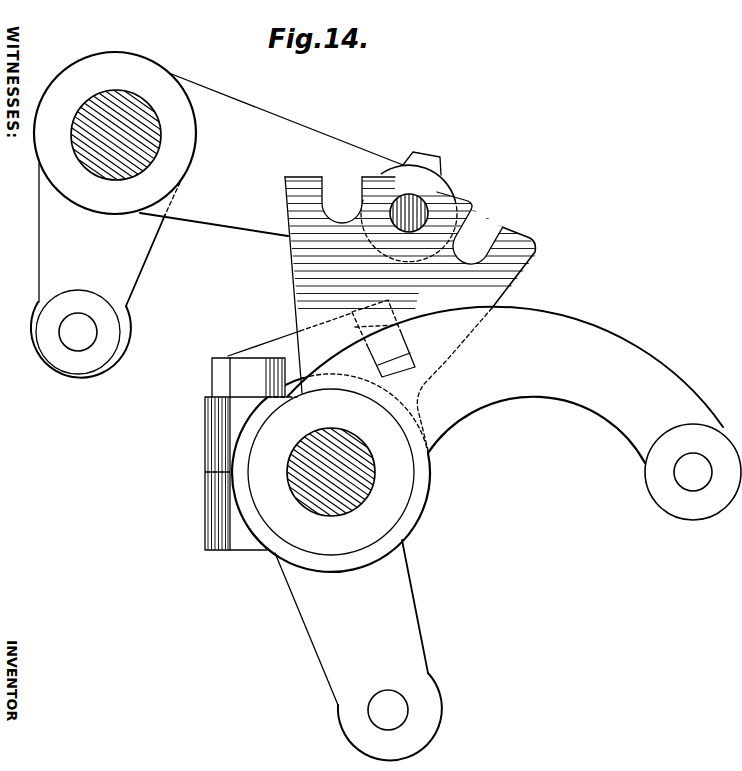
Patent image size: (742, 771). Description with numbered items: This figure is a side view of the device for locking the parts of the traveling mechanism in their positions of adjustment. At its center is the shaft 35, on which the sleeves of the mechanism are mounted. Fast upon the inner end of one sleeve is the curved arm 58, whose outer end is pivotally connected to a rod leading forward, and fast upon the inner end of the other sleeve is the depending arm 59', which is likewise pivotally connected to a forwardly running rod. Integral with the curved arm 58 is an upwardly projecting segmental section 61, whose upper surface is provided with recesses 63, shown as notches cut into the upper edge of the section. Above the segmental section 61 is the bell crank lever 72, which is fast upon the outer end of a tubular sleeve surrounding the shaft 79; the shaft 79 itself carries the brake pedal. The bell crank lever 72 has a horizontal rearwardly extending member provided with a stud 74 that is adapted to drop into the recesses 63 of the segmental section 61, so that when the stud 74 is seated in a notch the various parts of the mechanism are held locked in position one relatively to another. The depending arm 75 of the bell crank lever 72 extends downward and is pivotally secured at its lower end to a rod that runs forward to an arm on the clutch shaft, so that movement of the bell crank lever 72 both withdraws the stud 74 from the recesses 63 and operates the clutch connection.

The shaft 79 is at (116, 96).
The depending arm 75 is at (52, 250).
The bell crank lever 72 is at (283, 138).
The stud 74 is at (414, 198).
The segmental section 61 is at (300, 272).
The recesses 63 is at (412, 220).
The shaft 35 is at (308, 442).
The curved arm 58 is at (590, 327).
The depending arm 59' is at (372, 650).